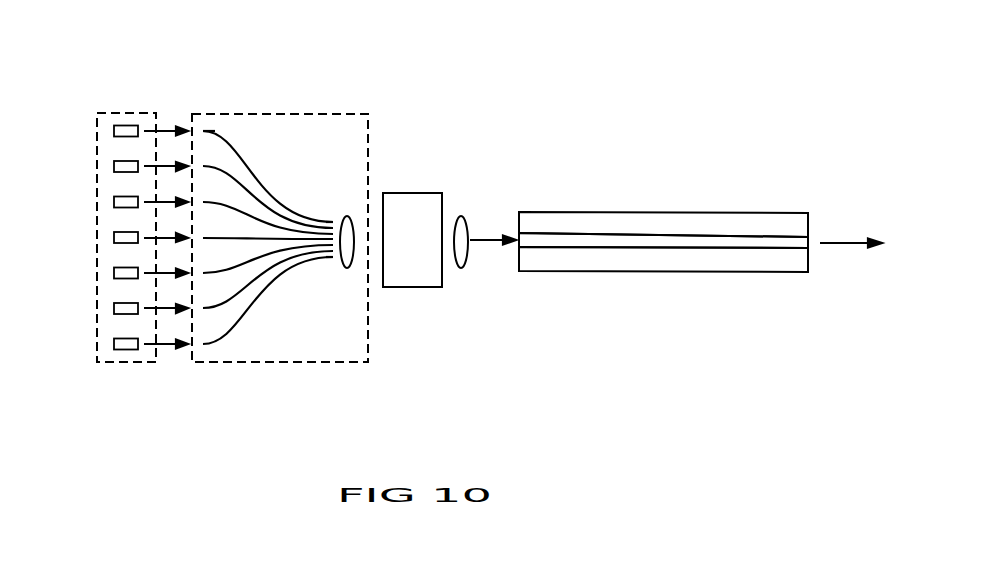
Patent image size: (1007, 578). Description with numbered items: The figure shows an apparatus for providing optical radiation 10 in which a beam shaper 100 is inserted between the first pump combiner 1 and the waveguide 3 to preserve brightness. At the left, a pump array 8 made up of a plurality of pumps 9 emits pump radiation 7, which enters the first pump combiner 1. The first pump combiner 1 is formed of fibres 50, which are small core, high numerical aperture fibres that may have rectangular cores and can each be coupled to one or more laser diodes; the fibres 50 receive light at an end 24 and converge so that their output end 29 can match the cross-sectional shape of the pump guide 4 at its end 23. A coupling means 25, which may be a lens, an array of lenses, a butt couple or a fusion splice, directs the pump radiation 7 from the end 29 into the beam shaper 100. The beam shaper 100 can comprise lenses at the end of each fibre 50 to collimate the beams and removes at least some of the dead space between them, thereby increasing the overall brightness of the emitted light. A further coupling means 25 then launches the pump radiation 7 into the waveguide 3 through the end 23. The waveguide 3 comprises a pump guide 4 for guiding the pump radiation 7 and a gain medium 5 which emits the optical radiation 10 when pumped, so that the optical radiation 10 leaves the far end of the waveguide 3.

The pump array 8 is at (108, 97).
The pump 9 is at (113, 130).
The pump radiation 7 is at (163, 112).
The first pump combiner 1 is at (295, 108).
The end of first pump waveguide 24 is at (203, 131).
The fibre 50 is at (233, 178).
The end of array of first pump waveguides 29 is at (330, 258).
The coupling means 25 is at (345, 216).
The beam shaper 100 is at (437, 287).
The end of pump guide 23 is at (518, 210).
The pump guide 4 is at (560, 212).
The gain medium 5 is at (718, 235).
The waveguide 3 is at (685, 272).
The optical radiation 10 is at (847, 243).